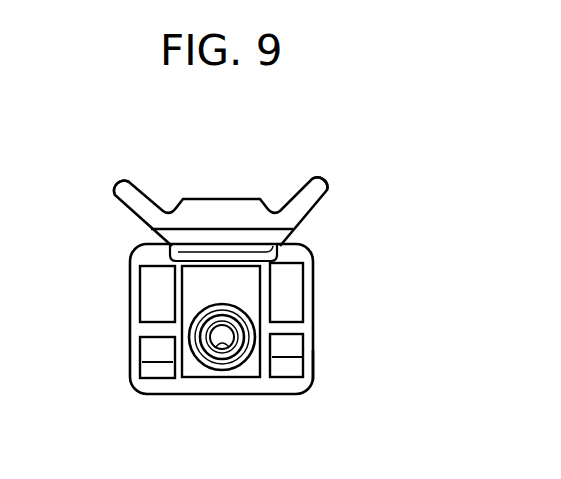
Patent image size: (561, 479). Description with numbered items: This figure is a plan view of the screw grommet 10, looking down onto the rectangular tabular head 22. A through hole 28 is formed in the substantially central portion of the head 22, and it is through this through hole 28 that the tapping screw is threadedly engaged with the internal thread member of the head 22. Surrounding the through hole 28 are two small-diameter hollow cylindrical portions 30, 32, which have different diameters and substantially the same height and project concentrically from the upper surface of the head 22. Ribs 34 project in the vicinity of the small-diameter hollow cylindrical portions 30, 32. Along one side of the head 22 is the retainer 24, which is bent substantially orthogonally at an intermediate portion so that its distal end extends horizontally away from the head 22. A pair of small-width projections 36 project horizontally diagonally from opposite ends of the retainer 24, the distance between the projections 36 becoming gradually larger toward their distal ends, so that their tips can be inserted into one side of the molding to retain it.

The screw grommet 10 is at (380, 294).
The head 22 is at (287, 280).
The retainer 24 is at (217, 210).
The through hole 28 is at (208, 353).
The small-diameter hollow cylindrical portion 30 is at (223, 346).
The small-diameter hollow cylindrical portion 32 is at (313, 363).
The ribs 34 is at (177, 290).
The small-width projections 36 is at (133, 197).